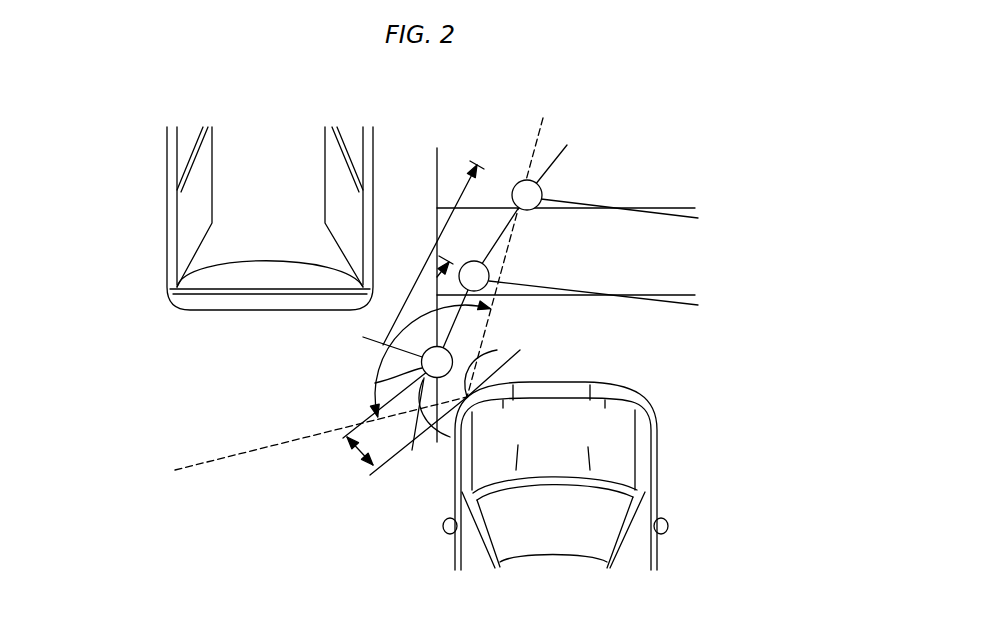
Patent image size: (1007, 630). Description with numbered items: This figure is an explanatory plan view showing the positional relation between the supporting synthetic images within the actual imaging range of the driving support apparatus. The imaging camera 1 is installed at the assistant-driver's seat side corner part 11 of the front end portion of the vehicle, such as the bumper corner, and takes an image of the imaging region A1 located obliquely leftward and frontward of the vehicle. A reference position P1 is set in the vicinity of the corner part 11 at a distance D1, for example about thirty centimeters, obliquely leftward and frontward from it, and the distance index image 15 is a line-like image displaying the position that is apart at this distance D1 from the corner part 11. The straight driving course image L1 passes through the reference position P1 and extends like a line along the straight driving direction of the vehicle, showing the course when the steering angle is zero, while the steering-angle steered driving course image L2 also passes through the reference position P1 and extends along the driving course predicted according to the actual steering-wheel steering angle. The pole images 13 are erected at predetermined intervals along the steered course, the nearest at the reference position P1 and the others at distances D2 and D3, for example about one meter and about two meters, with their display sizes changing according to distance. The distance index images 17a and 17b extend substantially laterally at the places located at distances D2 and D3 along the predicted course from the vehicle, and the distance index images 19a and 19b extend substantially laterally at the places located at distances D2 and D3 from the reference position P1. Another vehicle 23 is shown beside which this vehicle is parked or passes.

The imaging camera 1 is at (487, 370).
The corner part 11 is at (480, 385).
The pole images 13 is at (542, 192).
The distance index image 15 is at (450, 437).
The distance index image 17a is at (642, 298).
The distance index image 17b is at (640, 212).
The distance index image 19a is at (670, 293).
The distance index image 19b is at (667, 208).
The another vehicle 23 is at (145, 198).
The straight driving course image L1 is at (436, 196).
The steering-angle steered driving course image L2 is at (565, 147).
The distance D1 is at (358, 453).
The distance D2 is at (422, 307).
The distance D3 is at (453, 197).
The imaging region A1 is at (376, 396).
The reference position P1 is at (375, 383).